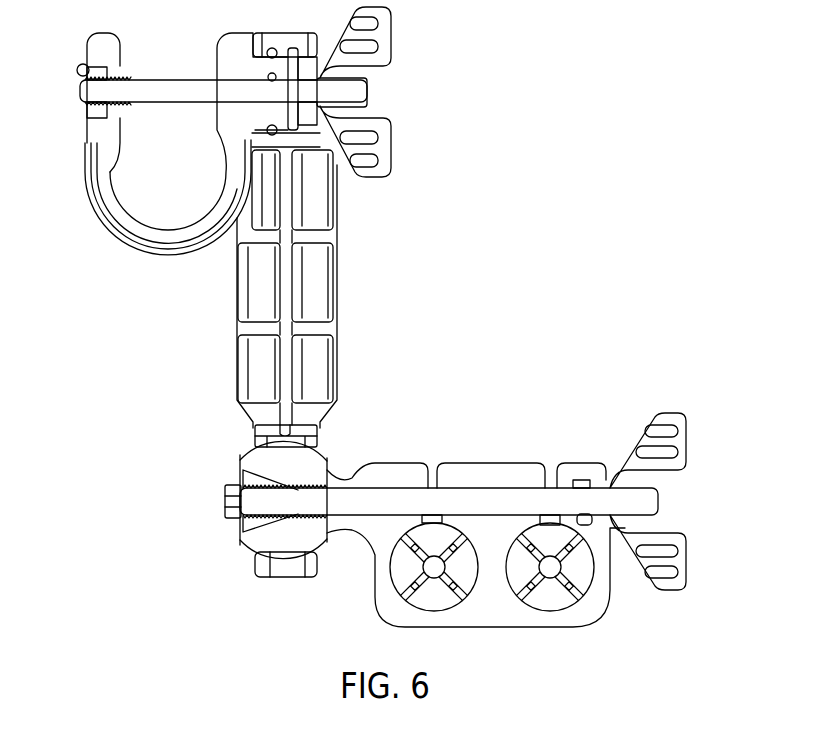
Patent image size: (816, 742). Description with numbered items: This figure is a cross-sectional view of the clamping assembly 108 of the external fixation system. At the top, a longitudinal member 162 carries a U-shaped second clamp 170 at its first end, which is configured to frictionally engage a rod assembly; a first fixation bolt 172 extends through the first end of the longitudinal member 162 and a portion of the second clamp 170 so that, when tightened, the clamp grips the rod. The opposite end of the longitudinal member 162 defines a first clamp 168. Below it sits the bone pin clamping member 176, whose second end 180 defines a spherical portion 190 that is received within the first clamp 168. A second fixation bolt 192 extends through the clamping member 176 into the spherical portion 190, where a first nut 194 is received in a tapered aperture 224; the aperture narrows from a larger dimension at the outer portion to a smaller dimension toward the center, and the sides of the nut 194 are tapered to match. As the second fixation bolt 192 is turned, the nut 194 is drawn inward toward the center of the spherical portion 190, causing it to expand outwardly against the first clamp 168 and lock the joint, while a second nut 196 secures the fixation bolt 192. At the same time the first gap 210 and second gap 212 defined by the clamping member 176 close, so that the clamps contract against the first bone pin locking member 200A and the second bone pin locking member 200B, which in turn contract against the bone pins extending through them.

The clamping assembly 108 is at (590, 55).
The longitudinal member 162 is at (341, 286).
The first clamp 168 is at (255, 442).
The second clamp 170 is at (170, 257).
The first fixation bolt 172 is at (171, 80).
The bone pin clamping member 176 is at (403, 468).
The second end 180 is at (323, 547).
The spherical portion 190 is at (287, 545).
The second fixation bolt 192 is at (477, 504).
The first nut 194 is at (242, 518).
The second nut 196 is at (232, 485).
The first bone pin locking member 200A is at (442, 602).
The second bone pin locking member 200B is at (558, 602).
The first gap 210 is at (432, 467).
The second gap 212 is at (548, 467).
The tapered aperture 224 is at (263, 525).